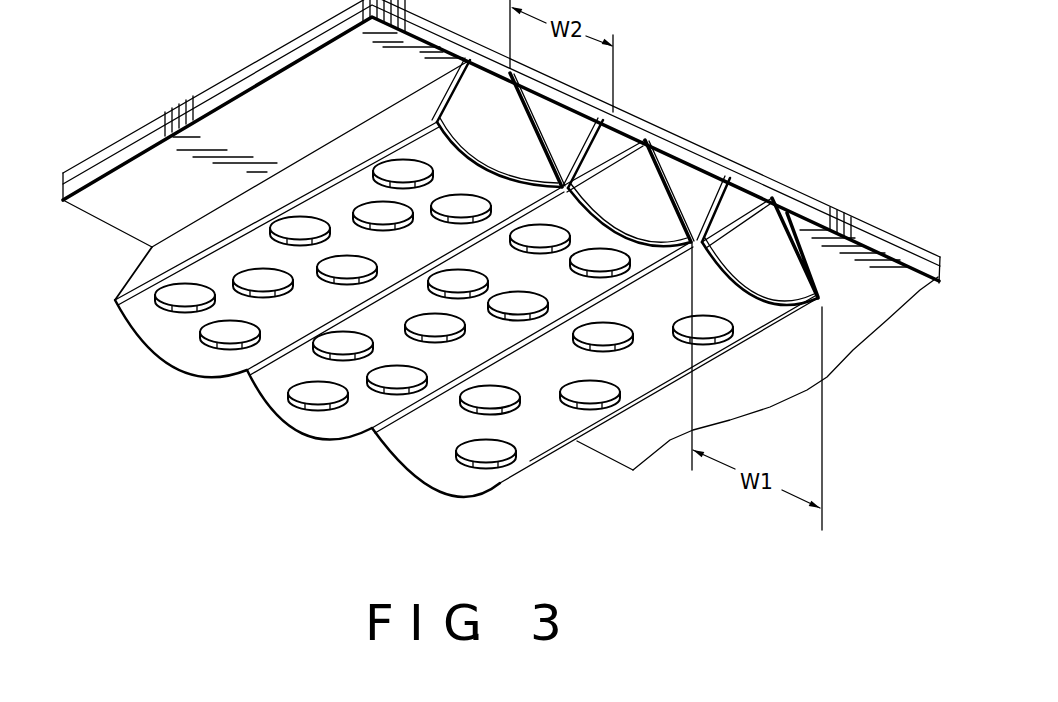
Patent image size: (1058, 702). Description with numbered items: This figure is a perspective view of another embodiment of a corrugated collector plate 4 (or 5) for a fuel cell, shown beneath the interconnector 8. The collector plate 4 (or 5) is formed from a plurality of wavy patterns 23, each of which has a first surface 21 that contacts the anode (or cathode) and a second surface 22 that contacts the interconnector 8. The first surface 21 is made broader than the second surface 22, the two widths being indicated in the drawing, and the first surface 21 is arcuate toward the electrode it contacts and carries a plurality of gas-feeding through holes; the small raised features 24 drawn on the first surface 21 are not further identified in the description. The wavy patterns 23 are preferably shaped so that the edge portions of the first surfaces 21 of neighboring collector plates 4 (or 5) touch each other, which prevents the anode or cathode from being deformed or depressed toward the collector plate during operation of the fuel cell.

The interconnector 8 is at (897, 244).
The first surface 21 is at (168, 347).
The second surface 22 is at (562, 100).
The wavy patterns 23 is at (666, 186).
The projection 24 is at (157, 300).
The collector plate 4 is at (744, 153).
The collector plate 5 is at (720, 177).